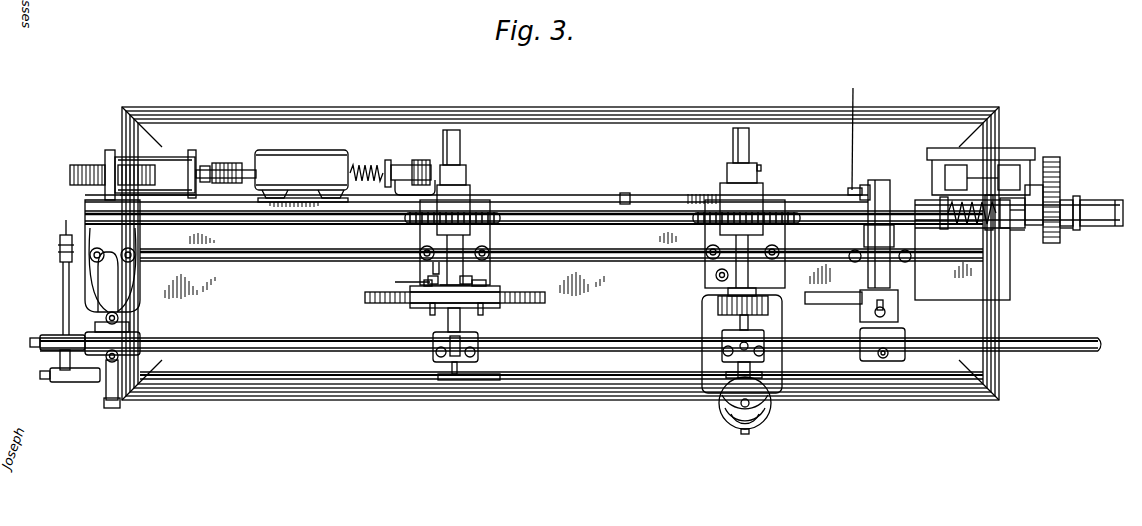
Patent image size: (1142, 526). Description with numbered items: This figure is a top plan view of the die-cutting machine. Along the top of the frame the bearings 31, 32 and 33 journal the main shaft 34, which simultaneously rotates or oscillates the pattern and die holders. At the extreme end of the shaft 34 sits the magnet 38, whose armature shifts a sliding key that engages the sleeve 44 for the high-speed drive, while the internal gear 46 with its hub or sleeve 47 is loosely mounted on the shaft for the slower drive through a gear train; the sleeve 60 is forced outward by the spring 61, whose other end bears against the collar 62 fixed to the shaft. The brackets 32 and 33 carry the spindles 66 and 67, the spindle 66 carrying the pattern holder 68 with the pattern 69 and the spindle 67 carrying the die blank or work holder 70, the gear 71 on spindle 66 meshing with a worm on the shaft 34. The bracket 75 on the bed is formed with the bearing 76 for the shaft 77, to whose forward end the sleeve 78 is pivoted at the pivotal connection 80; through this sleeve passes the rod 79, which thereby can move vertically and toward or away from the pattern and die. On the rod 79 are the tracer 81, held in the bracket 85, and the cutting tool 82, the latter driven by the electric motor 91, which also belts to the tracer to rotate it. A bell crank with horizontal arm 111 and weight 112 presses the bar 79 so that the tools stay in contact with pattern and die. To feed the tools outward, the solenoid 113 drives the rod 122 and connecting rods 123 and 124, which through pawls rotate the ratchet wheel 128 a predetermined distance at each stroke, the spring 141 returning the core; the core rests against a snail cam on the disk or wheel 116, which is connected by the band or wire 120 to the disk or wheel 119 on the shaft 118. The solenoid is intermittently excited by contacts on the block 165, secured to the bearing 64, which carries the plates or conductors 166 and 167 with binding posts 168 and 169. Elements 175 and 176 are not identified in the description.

The bearing 31 is at (100, 210).
The bearing 32 is at (489, 240).
The bearing 33 is at (772, 238).
The shaft 34 is at (332, 224).
The magnet 38 is at (1104, 226).
The sleeve 44 is at (1020, 245).
The internal gear 46 is at (1048, 160).
The hub or sleeve 47 is at (1062, 229).
The sleeve 60 is at (990, 230).
The spring 61 is at (975, 225).
The collar 62 is at (943, 226).
The bracket or bearing 64 is at (442, 262).
The spindle 66 is at (461, 152).
The spindle 67 is at (748, 153).
The pattern holder 68 is at (516, 303).
The pattern 69 is at (416, 309).
The die blank or work holder 70 is at (770, 372).
The gear 71 is at (497, 214).
The bracket 75 is at (903, 200).
The bearing 76 is at (866, 184).
The shaft 77 is at (880, 192).
The sleeve 78 is at (888, 342).
The rod 79 is at (246, 348).
The pivotal connection 80 is at (861, 314).
The tracer 81 is at (450, 336).
The cutting tool 82 is at (722, 330).
The bracket 85 is at (479, 359).
The electric motor 91 is at (746, 430).
The horizontal arm 111 is at (63, 293).
The weight 112 is at (62, 250).
The solenoid 113 is at (284, 162).
The disk or wheel 116 is at (388, 194).
The shaft 118 is at (858, 129).
The disk or wheel 119 is at (850, 195).
The band or wire 120 is at (558, 200).
The rod 122 is at (244, 166).
The connecting rod 123 is at (170, 170).
The connecting rod 124 is at (183, 193).
The ratchet wheel 128 is at (84, 164).
The spring 141 is at (367, 170).
The block 165 is at (426, 279).
The plate or conductor 166 is at (470, 278).
The plate or conductor 167 is at (483, 283).
The binding post 168 is at (413, 277).
The binding post 169 is at (430, 272).
The collar 175 is at (1088, 199).
The collar 176 is at (1076, 196).